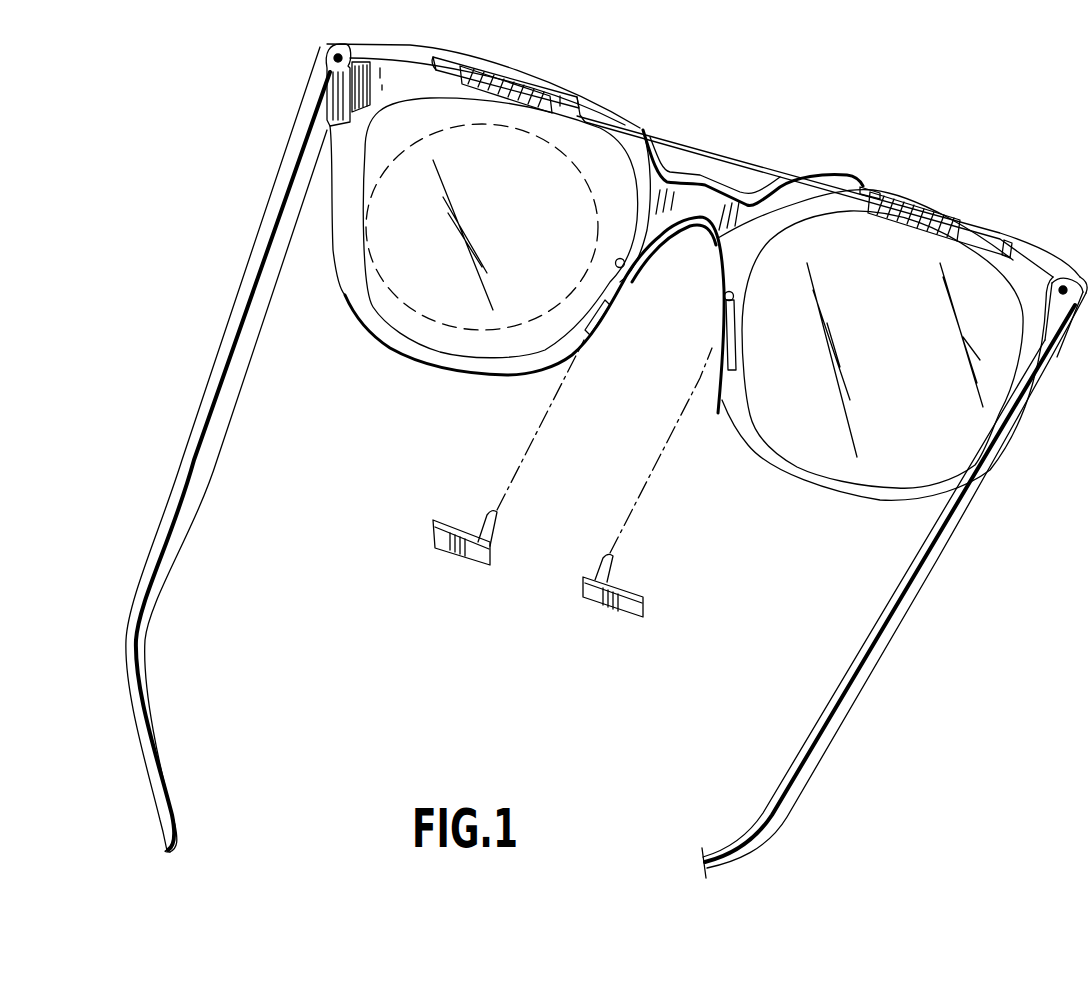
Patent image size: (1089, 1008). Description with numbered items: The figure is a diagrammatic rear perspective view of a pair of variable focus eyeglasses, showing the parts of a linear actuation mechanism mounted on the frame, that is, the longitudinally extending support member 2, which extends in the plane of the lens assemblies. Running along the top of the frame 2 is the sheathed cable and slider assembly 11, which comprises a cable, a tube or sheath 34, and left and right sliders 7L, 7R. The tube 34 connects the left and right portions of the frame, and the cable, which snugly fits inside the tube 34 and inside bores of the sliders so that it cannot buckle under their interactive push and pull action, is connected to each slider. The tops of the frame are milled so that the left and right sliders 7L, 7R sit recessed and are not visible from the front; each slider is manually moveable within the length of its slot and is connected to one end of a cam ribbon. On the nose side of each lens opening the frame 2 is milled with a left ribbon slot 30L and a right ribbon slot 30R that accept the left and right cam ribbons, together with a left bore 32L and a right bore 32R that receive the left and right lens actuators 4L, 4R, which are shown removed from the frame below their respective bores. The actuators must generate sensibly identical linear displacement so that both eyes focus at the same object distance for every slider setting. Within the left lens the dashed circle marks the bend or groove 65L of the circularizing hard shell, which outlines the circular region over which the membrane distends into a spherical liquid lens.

The longitudinally extending support member 2 is at (380, 340).
The sheathed cable and slider assembly 11 is at (745, 132).
The tube or sheath 34 is at (668, 135).
The left slider 7L is at (513, 77).
The right slider 7R is at (925, 200).
The bend or groove 65L is at (568, 240).
The left bore 32L is at (625, 266).
The left ribbon slot 30L is at (605, 318).
The right bore 32R is at (735, 298).
The right ribbon slot 30R is at (736, 360).
The left lens actuator 4L is at (433, 533).
The right lens actuator 4R is at (592, 598).